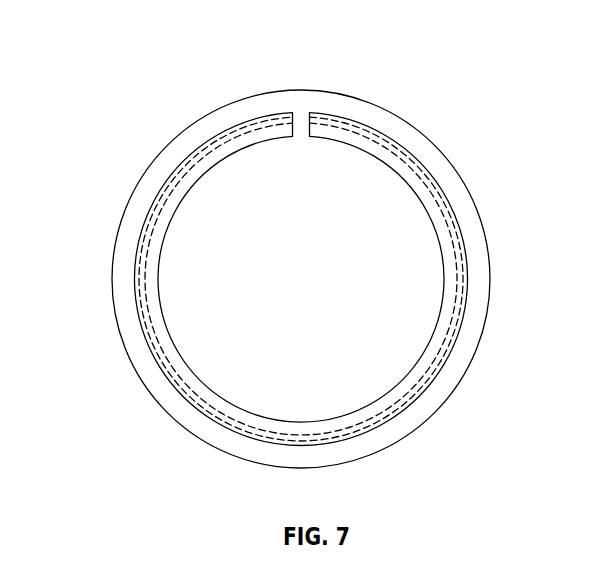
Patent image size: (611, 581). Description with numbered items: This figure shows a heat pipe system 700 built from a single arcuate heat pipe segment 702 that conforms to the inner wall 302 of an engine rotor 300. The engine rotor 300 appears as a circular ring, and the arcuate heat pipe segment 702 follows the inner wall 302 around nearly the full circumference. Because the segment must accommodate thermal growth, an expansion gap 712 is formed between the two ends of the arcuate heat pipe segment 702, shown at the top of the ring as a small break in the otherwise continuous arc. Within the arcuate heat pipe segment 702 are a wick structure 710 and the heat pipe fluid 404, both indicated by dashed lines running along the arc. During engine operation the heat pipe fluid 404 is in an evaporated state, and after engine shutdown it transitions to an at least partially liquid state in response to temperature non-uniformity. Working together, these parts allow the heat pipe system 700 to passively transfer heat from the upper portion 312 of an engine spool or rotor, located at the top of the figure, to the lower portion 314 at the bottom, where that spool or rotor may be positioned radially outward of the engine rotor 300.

The engine rotor 300 is at (490, 298).
The inner wall 302 is at (168, 167).
The upper portion 312 is at (302, 73).
The lower portion 314 is at (305, 484).
The heat pipe fluid 404 is at (172, 207).
The heat pipe system 700 is at (333, 180).
The arcuate heat pipe segment 702 is at (165, 342).
The wick structure 710 is at (377, 143).
The expansion gap 712 is at (304, 116).